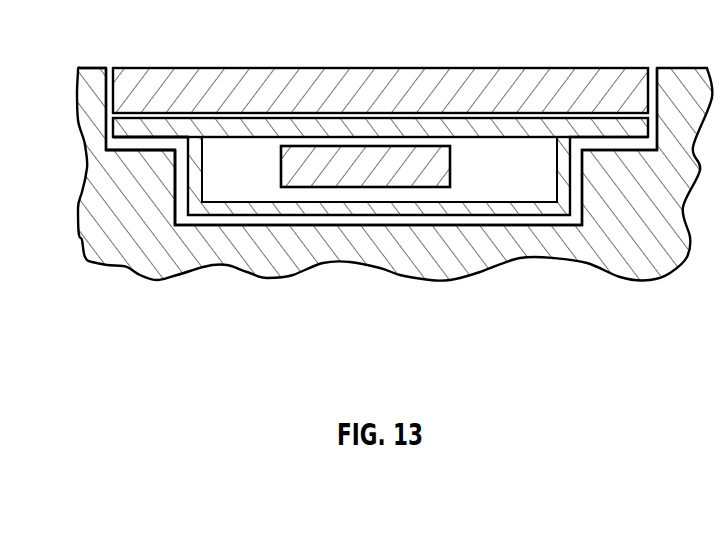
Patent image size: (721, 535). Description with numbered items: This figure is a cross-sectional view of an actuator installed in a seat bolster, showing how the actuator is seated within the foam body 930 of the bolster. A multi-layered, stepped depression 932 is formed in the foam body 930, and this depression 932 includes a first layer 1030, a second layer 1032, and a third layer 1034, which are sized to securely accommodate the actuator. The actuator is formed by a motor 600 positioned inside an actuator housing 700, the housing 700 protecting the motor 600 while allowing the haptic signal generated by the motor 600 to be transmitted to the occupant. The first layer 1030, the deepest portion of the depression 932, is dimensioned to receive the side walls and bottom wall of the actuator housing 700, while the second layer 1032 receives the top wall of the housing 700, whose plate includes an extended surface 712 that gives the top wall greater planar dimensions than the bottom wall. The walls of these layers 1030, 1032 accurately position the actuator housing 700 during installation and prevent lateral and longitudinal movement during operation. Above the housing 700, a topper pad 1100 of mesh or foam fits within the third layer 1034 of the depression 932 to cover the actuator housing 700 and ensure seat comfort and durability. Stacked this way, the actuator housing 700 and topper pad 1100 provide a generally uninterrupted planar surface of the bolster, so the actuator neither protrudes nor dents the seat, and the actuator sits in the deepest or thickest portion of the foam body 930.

The foam body 930 is at (637, 258).
The third layer 1034 is at (104, 71).
The topper pad 1100 is at (162, 78).
The second layer 1032 is at (105, 136).
The actuator housing 700 is at (202, 230).
The extended surface 712 is at (128, 150).
The first layer 1030 is at (172, 205).
The depression 932 is at (250, 240).
The motor 600 is at (358, 188).